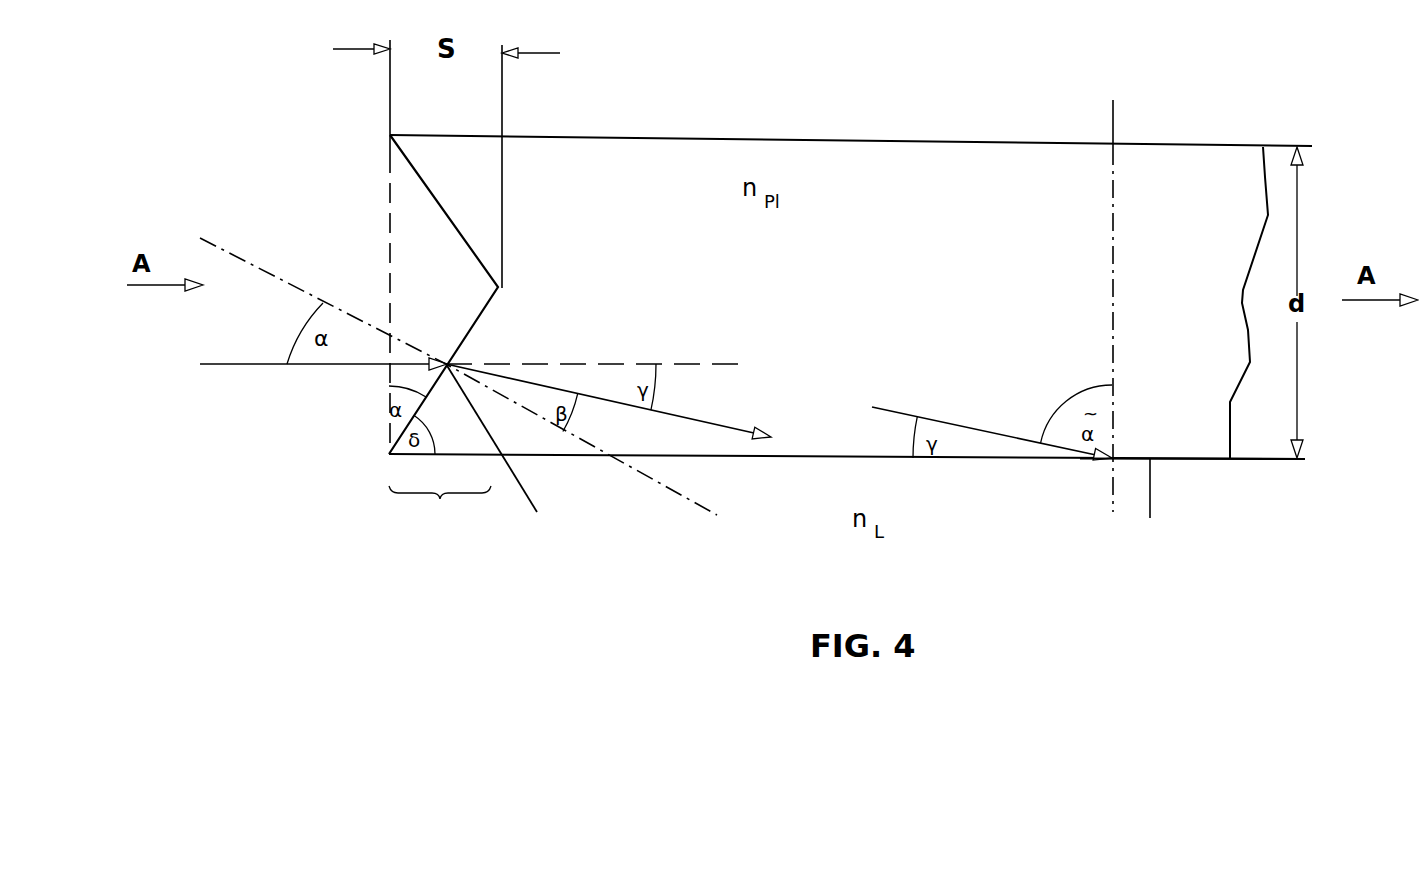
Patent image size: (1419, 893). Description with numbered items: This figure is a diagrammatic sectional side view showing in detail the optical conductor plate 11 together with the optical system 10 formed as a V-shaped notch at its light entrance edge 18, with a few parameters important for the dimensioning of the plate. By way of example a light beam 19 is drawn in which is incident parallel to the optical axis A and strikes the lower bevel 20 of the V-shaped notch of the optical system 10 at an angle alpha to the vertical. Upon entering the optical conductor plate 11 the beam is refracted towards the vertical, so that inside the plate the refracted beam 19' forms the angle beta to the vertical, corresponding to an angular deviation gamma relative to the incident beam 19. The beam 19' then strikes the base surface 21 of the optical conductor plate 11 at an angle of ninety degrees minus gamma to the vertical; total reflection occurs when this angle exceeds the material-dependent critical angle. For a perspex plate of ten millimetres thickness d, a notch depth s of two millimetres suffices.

The optical system 10 is at (440, 518).
The optical conductor plate 11 is at (1202, 476).
The entrance edge 18 is at (322, 164).
The light beam 19 is at (313, 413).
The refracted beam 19' is at (629, 457).
The lower bevel 20 is at (508, 457).
The base surface 21 is at (1148, 508).